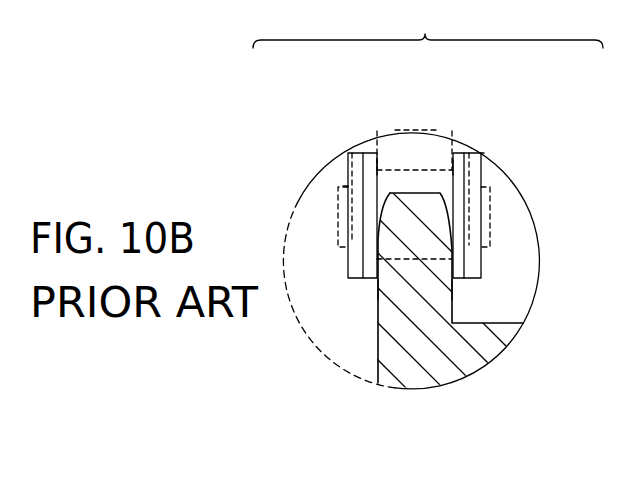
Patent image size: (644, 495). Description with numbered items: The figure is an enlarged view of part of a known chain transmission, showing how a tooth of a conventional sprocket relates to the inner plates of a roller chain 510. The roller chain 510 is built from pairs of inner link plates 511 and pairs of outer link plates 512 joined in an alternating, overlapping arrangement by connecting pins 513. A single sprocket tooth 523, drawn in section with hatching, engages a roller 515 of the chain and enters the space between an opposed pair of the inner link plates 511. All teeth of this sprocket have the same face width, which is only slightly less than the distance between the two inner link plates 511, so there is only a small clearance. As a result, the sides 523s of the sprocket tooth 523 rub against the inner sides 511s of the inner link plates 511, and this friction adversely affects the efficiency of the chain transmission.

The roller chain 510 is at (428, 30).
The inner link plates 511 is at (364, 152).
The inner sides of the inner link plates 511s is at (381, 167).
The outer link plates 512 is at (350, 153).
The connecting pins 513 is at (343, 186).
The roller 515 is at (423, 180).
The sprocket tooth 523 is at (427, 243).
The sides of the sprocket tooth 523s is at (377, 290).